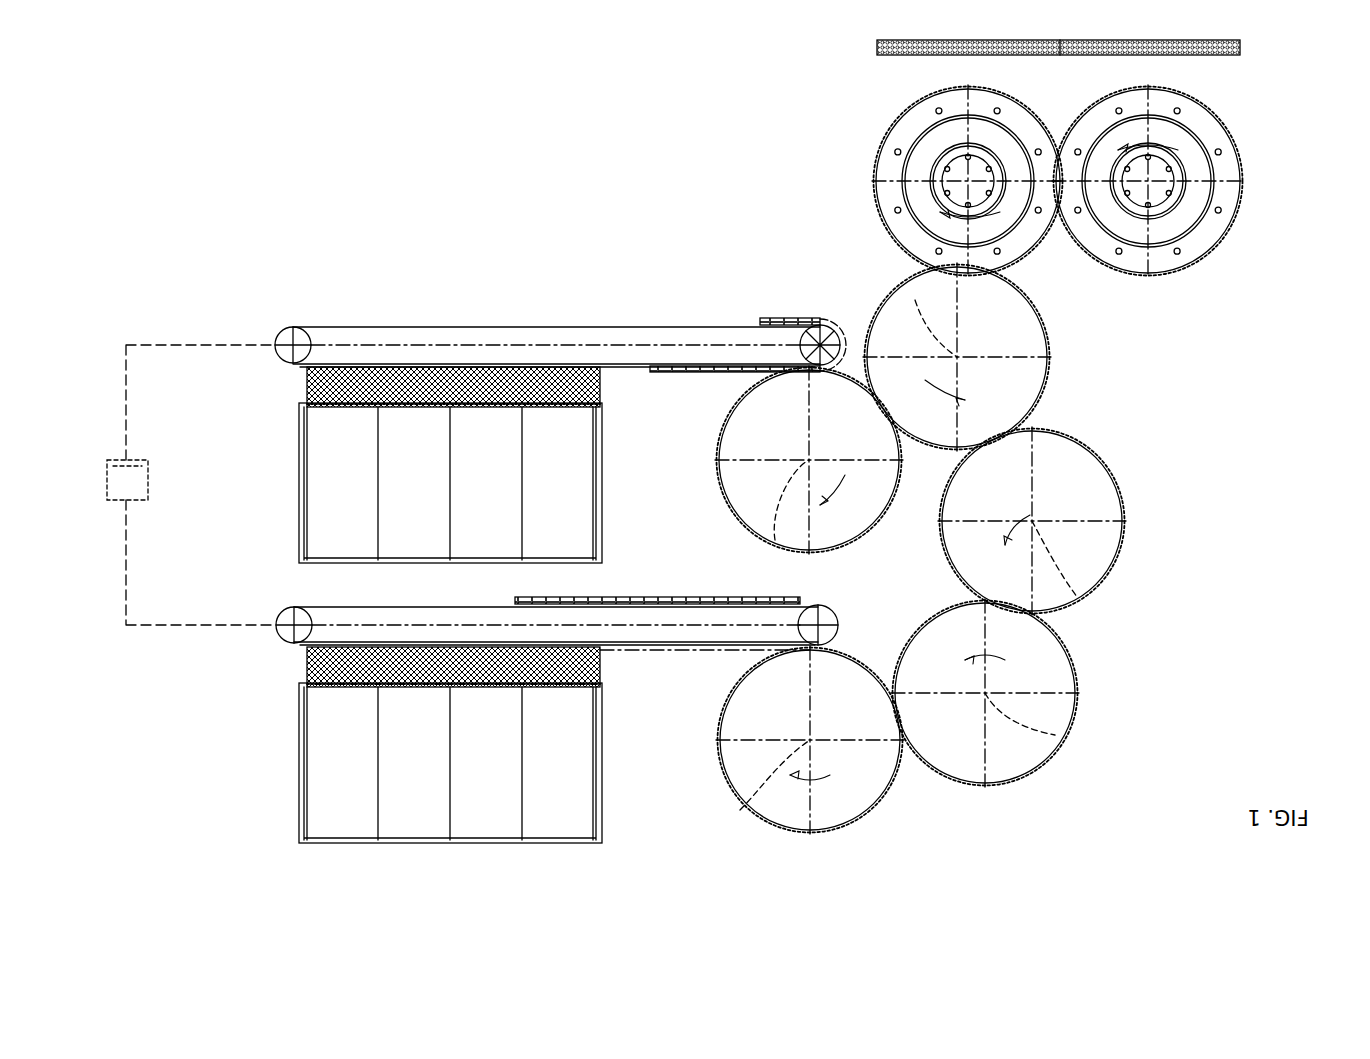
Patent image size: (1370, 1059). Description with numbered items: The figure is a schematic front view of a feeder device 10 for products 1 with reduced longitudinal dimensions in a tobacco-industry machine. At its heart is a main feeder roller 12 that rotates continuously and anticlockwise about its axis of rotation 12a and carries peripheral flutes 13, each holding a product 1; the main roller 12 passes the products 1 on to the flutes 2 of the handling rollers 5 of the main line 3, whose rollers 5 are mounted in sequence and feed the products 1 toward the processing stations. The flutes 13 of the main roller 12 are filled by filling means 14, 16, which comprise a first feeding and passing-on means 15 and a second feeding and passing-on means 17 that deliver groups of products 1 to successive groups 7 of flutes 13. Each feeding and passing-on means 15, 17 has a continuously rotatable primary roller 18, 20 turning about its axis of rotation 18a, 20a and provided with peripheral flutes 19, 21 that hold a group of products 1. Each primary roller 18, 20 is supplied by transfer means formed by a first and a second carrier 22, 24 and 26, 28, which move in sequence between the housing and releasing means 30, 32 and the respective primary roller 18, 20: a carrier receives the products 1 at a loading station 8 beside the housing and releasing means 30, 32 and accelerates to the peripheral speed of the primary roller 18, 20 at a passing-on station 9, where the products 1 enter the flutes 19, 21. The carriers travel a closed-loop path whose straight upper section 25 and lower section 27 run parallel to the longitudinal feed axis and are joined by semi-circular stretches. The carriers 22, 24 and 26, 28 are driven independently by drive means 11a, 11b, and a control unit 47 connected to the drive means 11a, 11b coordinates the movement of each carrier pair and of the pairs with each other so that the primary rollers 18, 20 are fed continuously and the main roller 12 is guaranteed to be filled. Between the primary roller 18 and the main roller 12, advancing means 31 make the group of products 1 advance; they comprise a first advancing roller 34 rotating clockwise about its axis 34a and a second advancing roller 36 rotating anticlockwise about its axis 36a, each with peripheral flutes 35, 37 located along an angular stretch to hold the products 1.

The products 1 is at (950, 97).
The flutes 2 is at (1222, 116).
The main line 3 is at (1092, 176).
The handling rollers 5 is at (893, 148).
The groups of flutes 7 is at (845, 300).
The loading station 8 is at (305, 377).
The passing-on station 9 is at (1060, 127).
The feeder device 10 is at (1210, 648).
The drive means 11a is at (285, 352).
The drive means 11b is at (286, 630).
The main feeder roller 12 is at (986, 338).
The axis of rotation 12a is at (905, 290).
The peripheral flutes 13 is at (882, 300).
The filling means 14 is at (1080, 534).
The first feeding and passing-on means 15 is at (428, 753).
The filling means 16 is at (745, 535).
The second feeding and passing-on means 17 is at (692, 457).
The primary roller 18 is at (789, 754).
The axis of rotation 18a is at (752, 790).
The peripheral flutes 19 is at (870, 802).
The primary roller 20 is at (809, 475).
The axis of rotation 20a is at (775, 530).
The peripheral flutes 21 is at (716, 376).
The first carrier 22 is at (621, 650).
The second carrier 24 is at (520, 600).
The upper section 25 is at (632, 374).
The first carrier 26 is at (398, 497).
The lower section 27 is at (420, 326).
The second carrier 28 is at (760, 318).
The housing and releasing means 30 is at (303, 692).
The advancing means 31 is at (1125, 735).
The housing and releasing means 32 is at (303, 407).
The first advancing roller 34 is at (1018, 720).
The axis of rotation 34a is at (1060, 735).
The peripheral flutes 35 is at (1080, 700).
The second advancing roller 36 is at (1110, 558).
The axis of rotation 36a is at (1085, 602).
The peripheral flutes 37 is at (1115, 478).
The control unit 47 is at (191, 485).